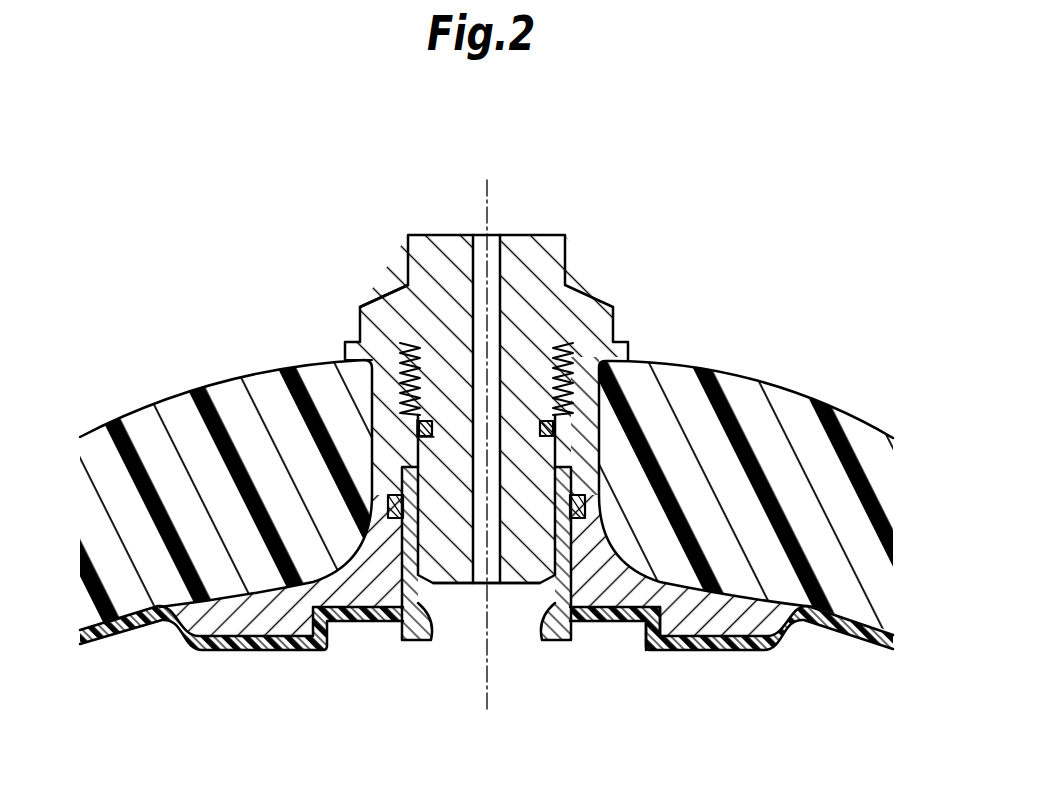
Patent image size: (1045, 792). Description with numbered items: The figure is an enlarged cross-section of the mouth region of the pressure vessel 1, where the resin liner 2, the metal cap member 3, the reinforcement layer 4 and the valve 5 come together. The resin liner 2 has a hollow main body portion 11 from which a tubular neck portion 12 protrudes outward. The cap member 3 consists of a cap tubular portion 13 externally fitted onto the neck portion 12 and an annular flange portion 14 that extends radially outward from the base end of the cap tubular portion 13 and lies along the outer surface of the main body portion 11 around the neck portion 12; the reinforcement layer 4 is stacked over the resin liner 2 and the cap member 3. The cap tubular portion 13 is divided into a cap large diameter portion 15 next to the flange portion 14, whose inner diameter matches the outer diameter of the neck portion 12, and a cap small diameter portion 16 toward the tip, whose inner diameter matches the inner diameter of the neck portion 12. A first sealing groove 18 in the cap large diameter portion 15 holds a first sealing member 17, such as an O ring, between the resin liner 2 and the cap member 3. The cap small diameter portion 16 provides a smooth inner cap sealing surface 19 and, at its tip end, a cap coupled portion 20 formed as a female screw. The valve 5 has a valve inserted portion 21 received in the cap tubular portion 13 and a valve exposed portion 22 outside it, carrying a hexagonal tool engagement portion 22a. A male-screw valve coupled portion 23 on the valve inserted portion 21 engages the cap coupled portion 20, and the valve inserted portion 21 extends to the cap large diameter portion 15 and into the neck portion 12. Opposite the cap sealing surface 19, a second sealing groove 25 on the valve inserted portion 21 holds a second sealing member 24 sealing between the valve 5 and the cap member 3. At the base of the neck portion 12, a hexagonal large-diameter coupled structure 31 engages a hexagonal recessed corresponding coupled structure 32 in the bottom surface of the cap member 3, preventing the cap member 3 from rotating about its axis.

The pressure vessel 1 is at (797, 273).
The resin liner 2 is at (841, 627).
The cap member 3 is at (631, 392).
The reinforcement layer 4 is at (746, 458).
The valve 5 is at (528, 247).
The main body portion 11 is at (112, 630).
The neck portion 12 is at (430, 648).
The cap tubular portion 13 is at (292, 396).
The flange portion 14 is at (250, 620).
The cap large diameter portion 15 is at (593, 530).
The cap small diameter portion 16 is at (575, 415).
The first sealing member 17 is at (389, 520).
The first sealing groove 18 is at (547, 440).
The cap sealing surface 19 is at (518, 555).
The cap coupled portion 20 is at (553, 343).
The valve inserted portion 21 is at (455, 570).
The valve exposed portion 22 is at (448, 247).
The tool engagement portion 22a is at (373, 312).
The valve coupled portion 23 is at (372, 398).
The second sealing member 24 is at (430, 418).
The second sealing groove 25 is at (408, 416).
The coupled structure 31 is at (647, 642).
The corresponding coupled structure 32 is at (665, 620).